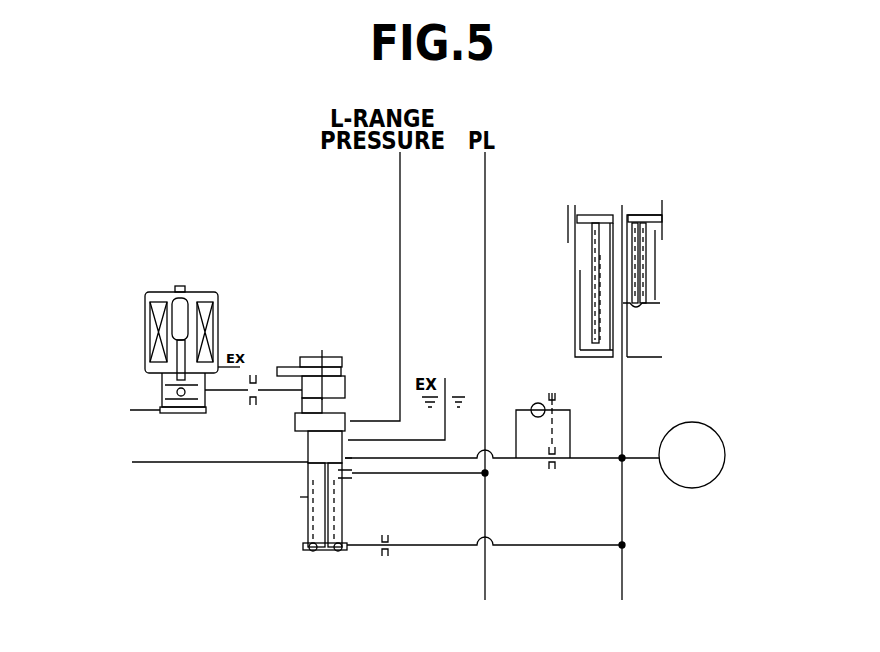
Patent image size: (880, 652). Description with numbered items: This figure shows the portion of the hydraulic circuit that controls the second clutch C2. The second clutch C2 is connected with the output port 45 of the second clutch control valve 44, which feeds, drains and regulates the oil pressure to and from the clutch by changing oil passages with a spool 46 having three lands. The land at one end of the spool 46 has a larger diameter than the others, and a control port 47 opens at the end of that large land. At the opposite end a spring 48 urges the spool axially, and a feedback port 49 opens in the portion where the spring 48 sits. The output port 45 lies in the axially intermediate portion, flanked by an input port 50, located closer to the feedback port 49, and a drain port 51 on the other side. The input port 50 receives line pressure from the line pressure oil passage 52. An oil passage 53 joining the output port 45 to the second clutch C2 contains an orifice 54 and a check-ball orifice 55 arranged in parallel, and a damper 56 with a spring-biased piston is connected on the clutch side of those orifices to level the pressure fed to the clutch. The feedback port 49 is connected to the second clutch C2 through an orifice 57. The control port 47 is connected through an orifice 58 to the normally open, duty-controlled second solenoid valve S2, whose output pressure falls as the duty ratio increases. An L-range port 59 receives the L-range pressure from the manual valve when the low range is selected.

The second clutch control valve 44 is at (324, 428).
The output port 45 is at (350, 453).
The spool 46 is at (308, 497).
The control port 47 is at (300, 395).
The spring 48 is at (314, 549).
The feedback port 49 is at (340, 552).
The input port 50 is at (343, 480).
The drain port 51 is at (356, 428).
The line pressure oil passage 52 is at (487, 475).
The oil passage 53 is at (606, 460).
The orifice 54 is at (556, 463).
The orifice having a check ball 55 is at (553, 398).
The damper 56 is at (660, 300).
The orifice 57 is at (390, 547).
The orifice 58 is at (248, 395).
The L-range port 59 is at (350, 415).
The second solenoid valve S2 is at (207, 292).
The second clutch C2 is at (692, 455).